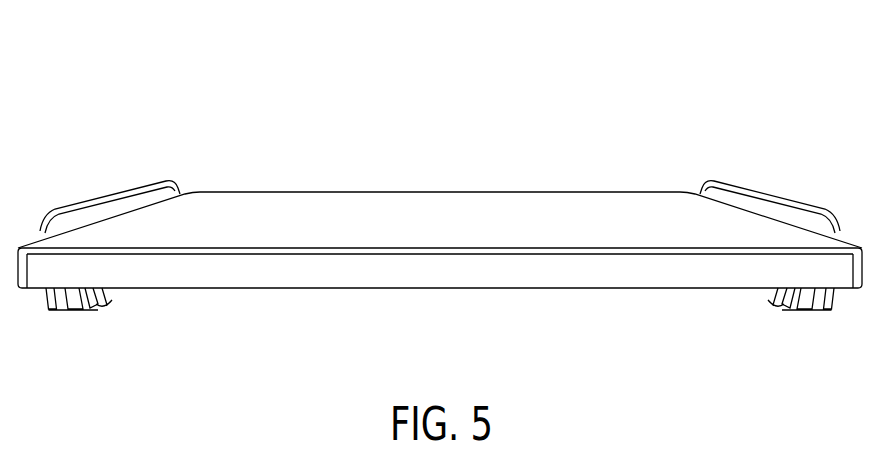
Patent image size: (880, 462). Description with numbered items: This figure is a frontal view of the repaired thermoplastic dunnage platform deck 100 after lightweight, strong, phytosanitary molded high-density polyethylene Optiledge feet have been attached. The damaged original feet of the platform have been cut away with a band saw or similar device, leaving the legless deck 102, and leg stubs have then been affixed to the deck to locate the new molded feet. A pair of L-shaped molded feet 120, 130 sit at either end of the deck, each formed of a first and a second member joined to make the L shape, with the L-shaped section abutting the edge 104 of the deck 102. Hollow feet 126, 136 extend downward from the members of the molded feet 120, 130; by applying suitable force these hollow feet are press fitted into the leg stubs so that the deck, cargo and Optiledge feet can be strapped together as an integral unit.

The thermoplastic dunnage platform deck 100 is at (440, 185).
The thermoplastic dunnage platform deck 102 is at (462, 223).
The edge 104 is at (560, 275).
The Optiledge foot 120 is at (748, 175).
The hollow foot 126 is at (770, 305).
The Optiledge foot 130 is at (117, 173).
The hollow foot 136 is at (110, 303).